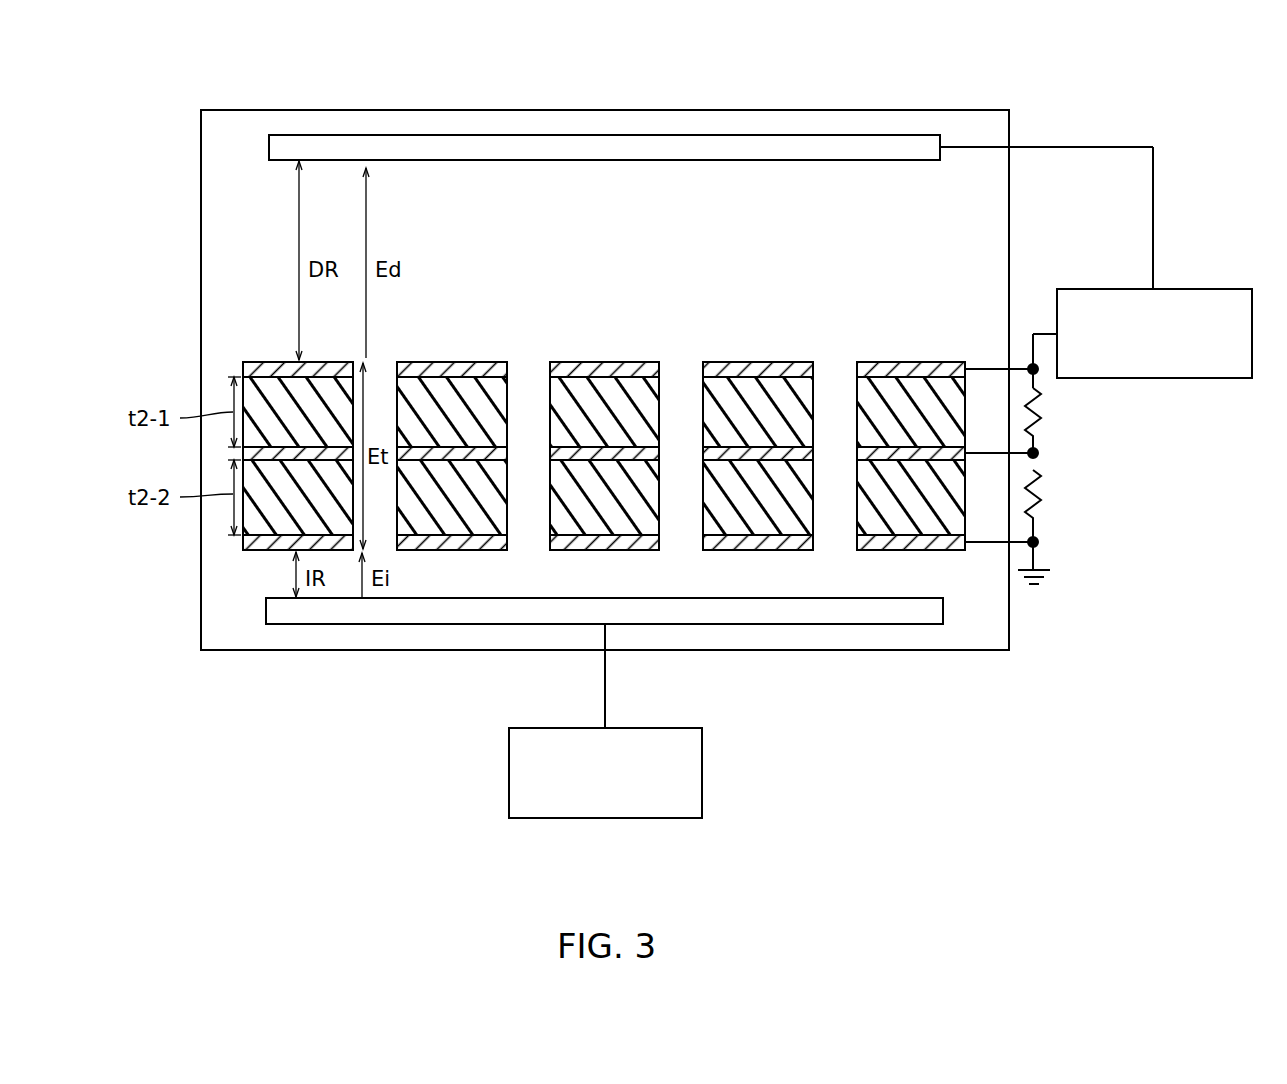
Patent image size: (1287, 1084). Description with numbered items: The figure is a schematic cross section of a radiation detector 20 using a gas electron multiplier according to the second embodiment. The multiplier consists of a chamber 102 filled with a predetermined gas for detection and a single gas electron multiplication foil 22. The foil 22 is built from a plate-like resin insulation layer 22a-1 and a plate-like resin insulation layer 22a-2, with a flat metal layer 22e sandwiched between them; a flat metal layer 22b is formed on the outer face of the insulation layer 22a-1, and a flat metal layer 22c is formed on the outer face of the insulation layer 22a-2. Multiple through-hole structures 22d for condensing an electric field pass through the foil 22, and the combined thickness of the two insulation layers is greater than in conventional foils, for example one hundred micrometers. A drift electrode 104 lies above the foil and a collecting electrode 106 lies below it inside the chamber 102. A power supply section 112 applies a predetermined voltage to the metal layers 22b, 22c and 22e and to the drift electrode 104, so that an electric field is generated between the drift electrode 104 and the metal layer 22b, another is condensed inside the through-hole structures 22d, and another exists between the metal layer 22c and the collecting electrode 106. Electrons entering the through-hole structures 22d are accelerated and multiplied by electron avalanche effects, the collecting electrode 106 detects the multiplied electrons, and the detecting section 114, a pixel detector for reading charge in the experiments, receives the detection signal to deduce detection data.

The radiation detector 20 is at (736, 68).
The gas electron multiplication foil 22 is at (938, 418).
The insulation layer 22a-1 is at (862, 410).
The insulation layer 22a-2 is at (860, 495).
The metal layer 22b is at (915, 366).
The metal layer 22c is at (933, 543).
The through-hole structures 22d is at (683, 378).
The metal layer 22e is at (858, 453).
The chamber 102 is at (1010, 122).
The drift electrode 104 is at (905, 147).
The collecting electrode 106 is at (891, 617).
The power supply section 112 is at (1208, 367).
The detecting section 114 is at (690, 775).